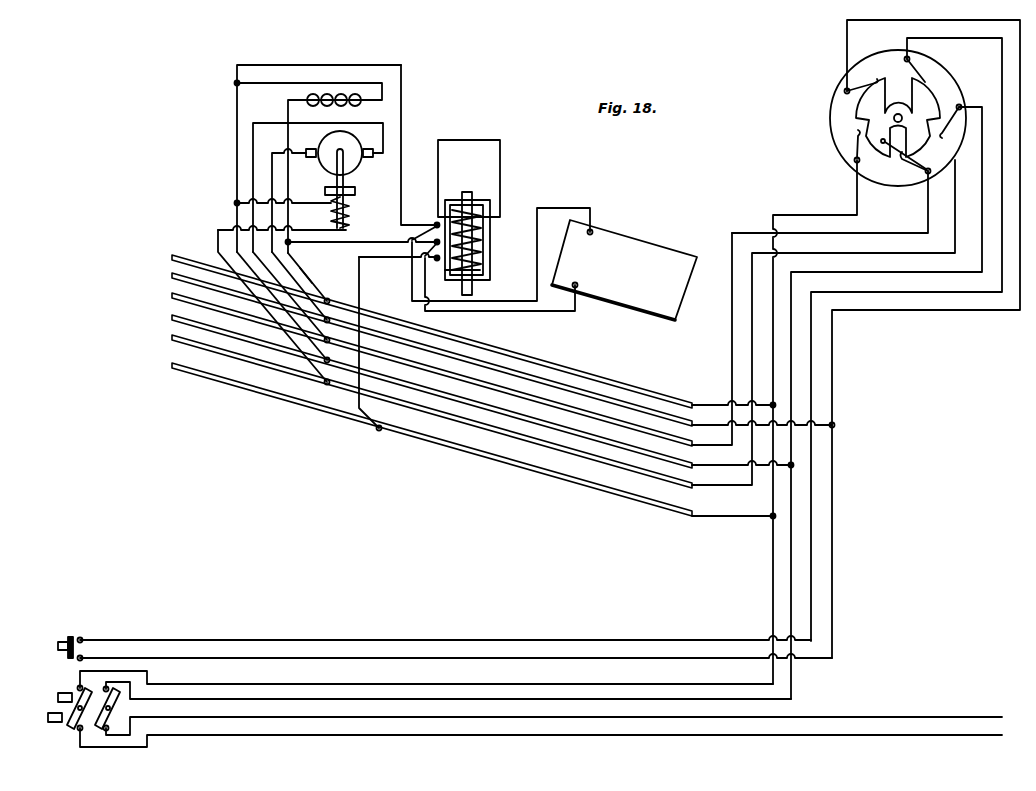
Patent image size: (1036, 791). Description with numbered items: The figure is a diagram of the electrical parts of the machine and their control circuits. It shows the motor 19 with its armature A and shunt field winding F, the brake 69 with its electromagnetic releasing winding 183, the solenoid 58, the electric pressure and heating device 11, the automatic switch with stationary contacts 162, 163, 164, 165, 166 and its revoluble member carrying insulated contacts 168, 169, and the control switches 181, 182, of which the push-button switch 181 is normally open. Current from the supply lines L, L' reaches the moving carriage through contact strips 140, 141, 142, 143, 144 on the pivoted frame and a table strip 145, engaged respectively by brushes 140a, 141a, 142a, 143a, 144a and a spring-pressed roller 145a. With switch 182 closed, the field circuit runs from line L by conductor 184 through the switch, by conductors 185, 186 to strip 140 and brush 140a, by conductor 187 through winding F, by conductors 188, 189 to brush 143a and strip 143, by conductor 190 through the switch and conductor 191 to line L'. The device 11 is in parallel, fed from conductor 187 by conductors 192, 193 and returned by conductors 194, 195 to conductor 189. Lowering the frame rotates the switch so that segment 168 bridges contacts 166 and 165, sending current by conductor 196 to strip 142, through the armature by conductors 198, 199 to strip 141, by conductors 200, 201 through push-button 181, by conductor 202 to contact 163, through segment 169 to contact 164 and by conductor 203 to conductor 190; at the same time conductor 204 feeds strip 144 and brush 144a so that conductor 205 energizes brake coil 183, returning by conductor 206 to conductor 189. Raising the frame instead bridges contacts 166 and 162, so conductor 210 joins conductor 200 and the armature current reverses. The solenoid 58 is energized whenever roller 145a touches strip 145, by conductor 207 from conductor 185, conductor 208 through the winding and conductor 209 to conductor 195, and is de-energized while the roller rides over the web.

The electric pressure and heating device 11 is at (640, 245).
The motor 19 is at (356, 168).
The solenoid 58 is at (484, 250).
The brake 69 is at (356, 193).
The contact strip 140 is at (568, 370).
The contact strip 141 is at (577, 390).
The contact strip 142 is at (585, 410).
The contact strip 143 is at (607, 440).
The contact strip 144 is at (612, 460).
The contact strip 145 is at (618, 490).
The contact brush 140a is at (326, 304).
The contact brush 141a is at (326, 323).
The contact brush 142a is at (326, 343).
The contact brush 143a is at (326, 363).
The contact brush 144a is at (329, 386).
The contact roller 145a is at (377, 431).
The stationary contact 162 is at (840, 93).
The stationary contact 163 is at (925, 70).
The stationary contact 164 is at (828, 311).
The stationary contact 165 is at (898, 192).
The stationary contact 166 is at (845, 143).
The insulated contact 168 is at (857, 119).
The insulated contact 169 is at (948, 100).
The push-button switch 181 is at (62, 642).
The control switch 182 is at (66, 693).
The electromagnetic releasing winding 183 is at (350, 213).
The conductor 184 is at (512, 735).
The conductor 185 is at (440, 666).
The conductor 186 is at (720, 400).
The conductor 187 is at (306, 274).
The conductor 188 is at (318, 83).
The conductor 189 is at (237, 140).
The conductor 190 is at (778, 495).
The conductor 191 is at (540, 702).
The conductor 192 is at (354, 242).
The conductor 193 is at (535, 318).
The conductor 194 is at (540, 208).
The conductor 195 is at (401, 107).
The conductor 196 is at (732, 331).
The conductor 198 is at (278, 123).
The conductor 199 is at (290, 257).
The conductor 200 is at (832, 422).
The conductor 201 is at (832, 616).
The conductor 202 is at (812, 360).
The conductor 203 is at (950, 270).
The conductor 204 is at (960, 240).
The conductor 205 is at (218, 236).
The conductor 206 is at (236, 203).
The conductor 207 is at (760, 518).
The conductor 208 is at (359, 287).
The conductor 209 is at (492, 140).
The conductor 210 is at (1010, 312).
The shunt field winding F is at (325, 95).
The armature A is at (322, 191).
The line L is at (546, 737).
The line L' is at (561, 722).